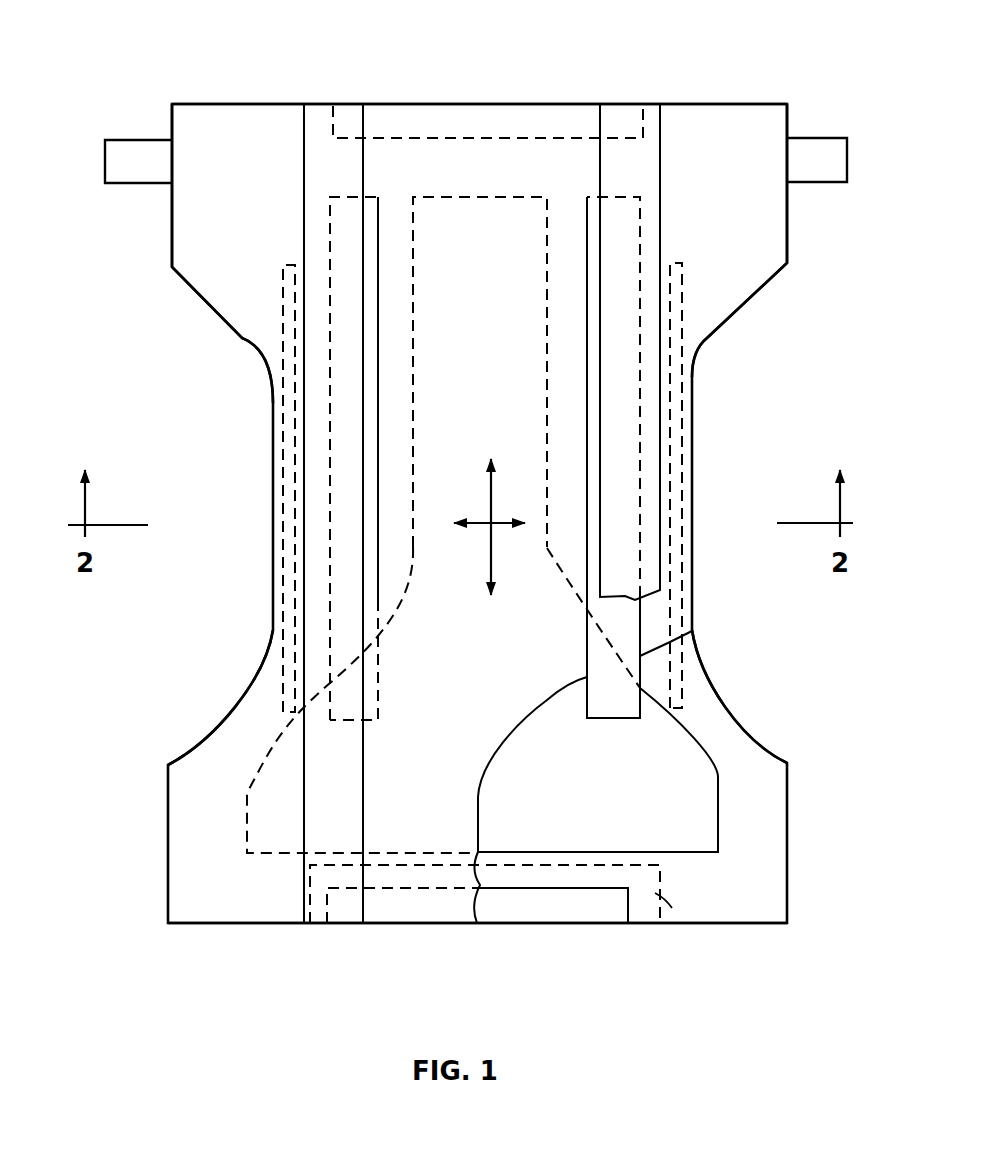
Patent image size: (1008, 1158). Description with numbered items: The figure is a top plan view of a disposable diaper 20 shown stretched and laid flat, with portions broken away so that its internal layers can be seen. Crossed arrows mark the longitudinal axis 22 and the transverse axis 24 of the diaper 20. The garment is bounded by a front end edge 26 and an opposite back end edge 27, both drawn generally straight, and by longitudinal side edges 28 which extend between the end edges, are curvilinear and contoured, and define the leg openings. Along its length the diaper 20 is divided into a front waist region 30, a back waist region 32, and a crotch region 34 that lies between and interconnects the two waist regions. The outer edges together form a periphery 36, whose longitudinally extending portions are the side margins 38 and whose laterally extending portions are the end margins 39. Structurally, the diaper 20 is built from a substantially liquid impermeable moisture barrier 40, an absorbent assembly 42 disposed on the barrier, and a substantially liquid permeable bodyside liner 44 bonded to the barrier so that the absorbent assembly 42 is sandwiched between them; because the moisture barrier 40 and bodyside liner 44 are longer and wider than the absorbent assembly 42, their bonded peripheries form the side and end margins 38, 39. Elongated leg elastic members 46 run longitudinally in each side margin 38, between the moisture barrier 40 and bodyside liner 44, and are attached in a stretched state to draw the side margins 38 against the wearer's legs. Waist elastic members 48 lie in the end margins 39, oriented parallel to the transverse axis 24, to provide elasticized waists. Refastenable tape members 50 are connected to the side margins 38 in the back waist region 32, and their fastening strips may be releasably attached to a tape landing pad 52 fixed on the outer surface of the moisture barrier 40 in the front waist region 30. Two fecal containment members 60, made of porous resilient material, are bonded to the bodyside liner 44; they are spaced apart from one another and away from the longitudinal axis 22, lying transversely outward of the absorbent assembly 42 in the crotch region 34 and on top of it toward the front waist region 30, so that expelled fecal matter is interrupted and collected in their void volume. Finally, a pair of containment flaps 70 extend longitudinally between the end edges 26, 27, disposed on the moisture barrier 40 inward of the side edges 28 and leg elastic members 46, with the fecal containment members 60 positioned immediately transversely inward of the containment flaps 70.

The disposable diaper 20 is at (222, 78).
The longitudinal axis 22 is at (493, 493).
The transverse axis 24 is at (498, 530).
The front longitudinal end edge 26 is at (238, 925).
The back longitudinal end edge 27 is at (738, 103).
The longitudinal side edges 28 is at (172, 256).
The front waist region 30 is at (221, 889).
The back waist region 32 is at (333, 165).
The crotch region 34 is at (233, 420).
The periphery 36 is at (690, 908).
The side margins 38 is at (205, 760).
The end margins 39 is at (660, 118).
The moisture barrier 40 is at (750, 850).
The absorbent assembly 42 is at (596, 777).
The bodyside liner 44 is at (443, 525).
The leg elastic members 46 is at (283, 563).
The waist elastic members 48 is at (503, 138).
The refastenable tape members 50 is at (105, 168).
The tape landing pad 52 is at (672, 935).
The fecal containment members 60 is at (380, 388).
The containment flaps 70 is at (600, 237).